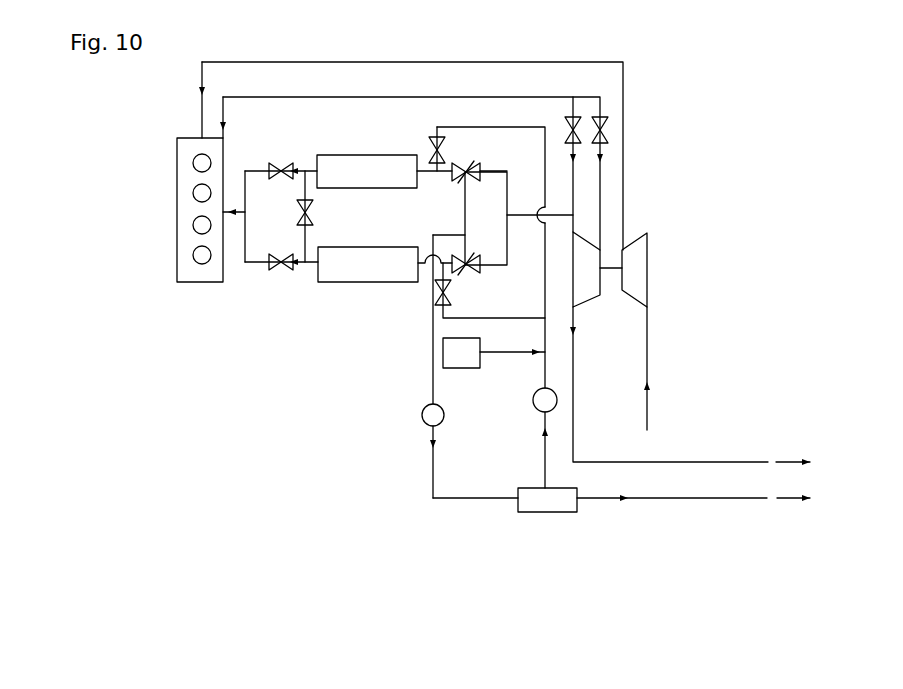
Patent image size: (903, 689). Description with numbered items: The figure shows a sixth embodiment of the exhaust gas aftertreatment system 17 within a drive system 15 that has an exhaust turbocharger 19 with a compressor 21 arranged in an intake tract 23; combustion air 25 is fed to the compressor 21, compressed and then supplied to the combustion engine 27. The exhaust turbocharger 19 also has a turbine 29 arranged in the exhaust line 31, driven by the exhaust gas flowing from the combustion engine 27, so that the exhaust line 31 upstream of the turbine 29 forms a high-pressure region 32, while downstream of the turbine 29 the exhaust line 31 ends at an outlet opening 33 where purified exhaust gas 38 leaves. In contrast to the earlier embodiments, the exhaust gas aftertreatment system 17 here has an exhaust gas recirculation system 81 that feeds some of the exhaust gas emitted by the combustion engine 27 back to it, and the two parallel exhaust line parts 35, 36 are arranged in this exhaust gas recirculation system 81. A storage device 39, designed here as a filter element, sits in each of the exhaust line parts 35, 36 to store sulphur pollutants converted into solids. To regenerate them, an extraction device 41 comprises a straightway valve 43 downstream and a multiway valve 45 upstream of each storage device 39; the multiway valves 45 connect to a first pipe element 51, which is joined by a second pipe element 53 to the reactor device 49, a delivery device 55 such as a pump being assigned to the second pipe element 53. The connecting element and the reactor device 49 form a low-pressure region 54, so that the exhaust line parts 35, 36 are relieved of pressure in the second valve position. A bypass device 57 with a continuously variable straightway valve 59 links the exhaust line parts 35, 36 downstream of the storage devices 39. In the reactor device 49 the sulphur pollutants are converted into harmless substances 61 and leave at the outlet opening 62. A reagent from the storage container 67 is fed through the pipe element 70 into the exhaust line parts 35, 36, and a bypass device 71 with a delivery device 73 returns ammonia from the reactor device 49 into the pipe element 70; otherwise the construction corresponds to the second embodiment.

The drive system 15 is at (848, 76).
The exhaust gas aftertreatment system 17 is at (296, 399).
The exhaust turbocharger 19 is at (639, 237).
The compressor 21 is at (642, 278).
The intake tract 23 is at (586, 61).
The combustion air 25 is at (650, 414).
The combustion engine 27 is at (176, 174).
The turbine 29 is at (609, 334).
The exhaust line 31 is at (497, 96).
The high-pressure region 32 is at (390, 346).
The outlet opening 33 is at (690, 384).
The exhaust line part 35 is at (408, 129).
The exhaust line part 36 is at (329, 321).
The purified exhaust gas 38 is at (795, 458).
The storage device 39 is at (340, 172).
The extraction device 41 is at (302, 133).
The straightway valve 43 is at (290, 290).
The multiway valve 45 is at (481, 222).
The reactor device 49 is at (545, 500).
The first pipe element 51 is at (464, 212).
The second pipe element 53 is at (432, 490).
The low-pressure region 54 is at (629, 561).
The delivery device 55 is at (424, 422).
The bypass device 57 is at (305, 236).
The continuously variable straightway valve 59 is at (310, 214).
The harmless substances 61 is at (792, 504).
The outlet opening 62 is at (672, 528).
The storage container 67 is at (460, 368).
The pipe element 70 is at (542, 334).
The bypass device 71 is at (546, 468).
The delivery device 73 is at (534, 406).
The exhaust gas recirculation system 81 is at (563, 217).